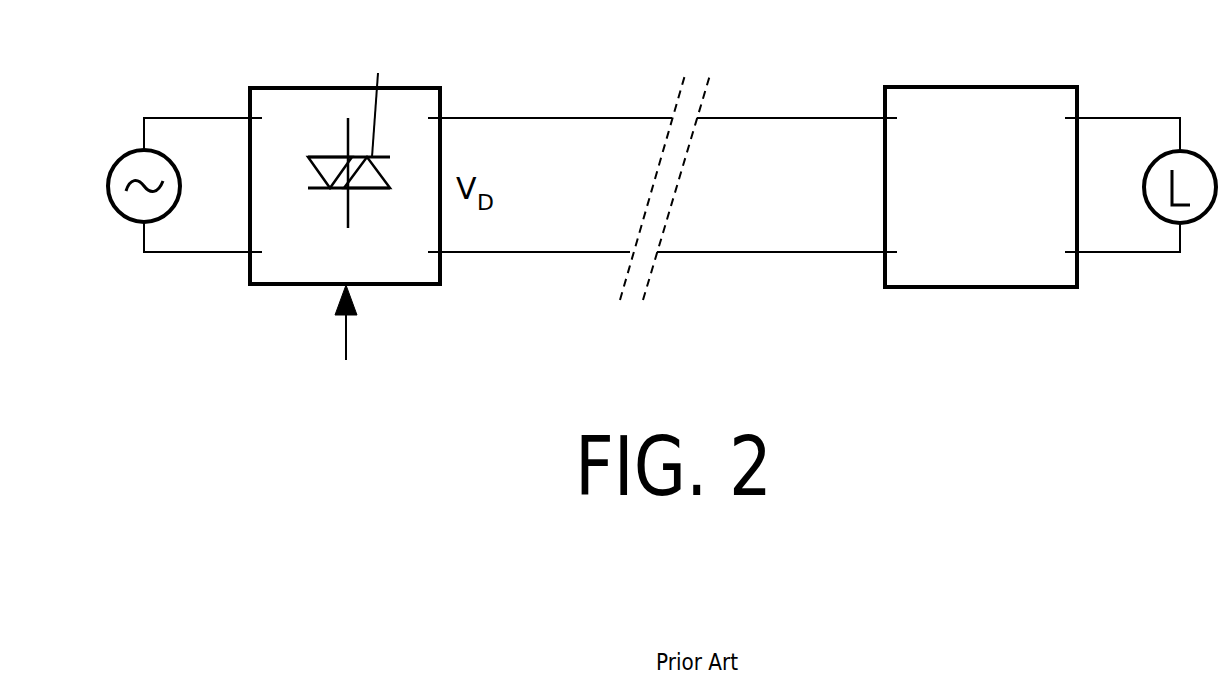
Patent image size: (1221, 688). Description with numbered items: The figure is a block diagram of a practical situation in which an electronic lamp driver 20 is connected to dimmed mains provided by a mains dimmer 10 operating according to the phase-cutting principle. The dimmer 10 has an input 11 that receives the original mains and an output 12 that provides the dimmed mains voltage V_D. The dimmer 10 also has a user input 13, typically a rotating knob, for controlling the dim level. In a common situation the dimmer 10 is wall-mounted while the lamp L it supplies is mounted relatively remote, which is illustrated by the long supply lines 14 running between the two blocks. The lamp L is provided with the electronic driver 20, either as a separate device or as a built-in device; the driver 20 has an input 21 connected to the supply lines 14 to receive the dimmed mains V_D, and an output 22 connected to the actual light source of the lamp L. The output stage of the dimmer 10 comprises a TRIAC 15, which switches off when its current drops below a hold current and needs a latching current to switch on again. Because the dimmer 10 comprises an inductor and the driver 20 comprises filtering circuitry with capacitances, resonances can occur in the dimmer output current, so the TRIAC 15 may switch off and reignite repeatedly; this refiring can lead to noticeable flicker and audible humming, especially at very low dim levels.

The mains dimmer 10 is at (300, 88).
The input 11 is at (271, 185).
The output 12 is at (417, 185).
The user input 13 is at (346, 344).
The supply lines 14 is at (543, 252).
The TRIAC 15 is at (379, 94).
The electronic lamp driver 20 is at (1003, 203).
The input 21 is at (906, 183).
The output 22 is at (1053, 183).